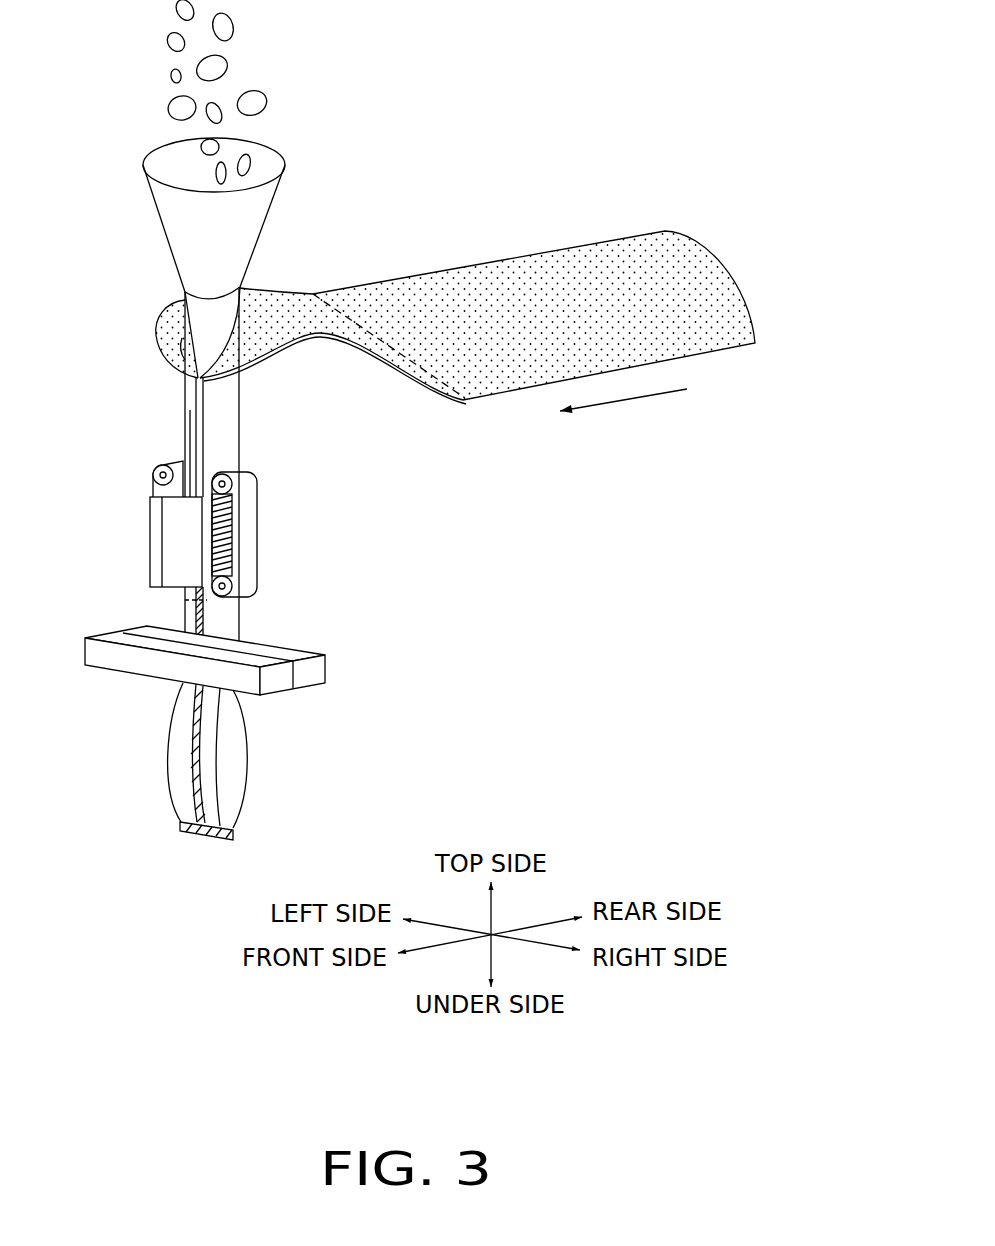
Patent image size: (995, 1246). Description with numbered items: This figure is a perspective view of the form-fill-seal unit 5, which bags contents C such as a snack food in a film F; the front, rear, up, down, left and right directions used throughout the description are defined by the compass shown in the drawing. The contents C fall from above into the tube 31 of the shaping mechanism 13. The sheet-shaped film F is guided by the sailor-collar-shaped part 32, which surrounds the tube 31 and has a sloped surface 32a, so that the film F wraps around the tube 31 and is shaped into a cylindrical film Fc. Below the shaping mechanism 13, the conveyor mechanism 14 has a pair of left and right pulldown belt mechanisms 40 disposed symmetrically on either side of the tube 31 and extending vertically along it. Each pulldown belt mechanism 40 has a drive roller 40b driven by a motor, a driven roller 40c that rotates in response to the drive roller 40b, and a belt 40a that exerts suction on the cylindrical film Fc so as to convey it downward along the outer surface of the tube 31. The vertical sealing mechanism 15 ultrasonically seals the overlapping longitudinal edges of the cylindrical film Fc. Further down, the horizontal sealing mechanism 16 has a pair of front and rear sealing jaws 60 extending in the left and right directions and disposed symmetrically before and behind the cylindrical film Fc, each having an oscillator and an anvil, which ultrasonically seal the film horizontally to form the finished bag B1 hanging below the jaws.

The form-fill-seal unit 5 is at (485, 38).
The contents C is at (108, 0).
The film F is at (612, 280).
The cylindrical film Fc is at (227, 387).
The tube 31 is at (208, 306).
The shaping mechanism 13 is at (148, 352).
The sailor-collar-shaped part 32 is at (330, 347).
The sloped surface 32a is at (380, 342).
The conveyor mechanism 14 is at (440, 525).
The vertical sealing mechanism 15 is at (157, 542).
The pulldown belt mechanism 40 is at (130, 495).
The belt 40a is at (247, 545).
The drive roller 40b is at (221, 479).
The driven roller 40c is at (227, 592).
The horizontal sealing mechanism 16 is at (365, 672).
The sealing jaw 60 is at (285, 652).
The bag B1 is at (230, 753).